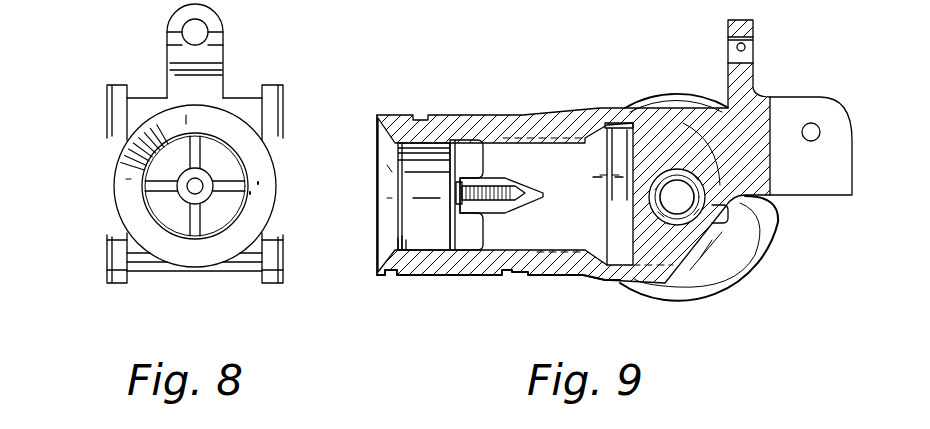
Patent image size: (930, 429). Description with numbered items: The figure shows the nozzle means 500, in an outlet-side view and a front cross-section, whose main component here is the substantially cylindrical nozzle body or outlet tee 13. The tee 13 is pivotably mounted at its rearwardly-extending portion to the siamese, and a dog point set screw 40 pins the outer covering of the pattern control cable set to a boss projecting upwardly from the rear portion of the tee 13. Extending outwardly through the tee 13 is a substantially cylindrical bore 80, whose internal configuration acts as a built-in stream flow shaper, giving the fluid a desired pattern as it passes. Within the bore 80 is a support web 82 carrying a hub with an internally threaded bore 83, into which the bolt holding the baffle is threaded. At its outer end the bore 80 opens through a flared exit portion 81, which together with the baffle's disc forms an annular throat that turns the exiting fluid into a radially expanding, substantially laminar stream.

In FIG. 8, the nozzle means 500 is at (135, 83).
In FIG. 9, the nozzle means 500 is at (557, 105).
In FIG. 8, the dog point set screw 40 is at (223, 25).
In FIG. 9, the dog point set screw 40 is at (732, 28).
In FIG. 8, the bore 80 is at (223, 162).
In FIG. 9, the bore 80 is at (415, 218).
In FIG. 9, the flared exit portion 81 is at (398, 248).
In FIG. 8, the support web 82 is at (230, 183).
In FIG. 9, the support web 82 is at (463, 155).
In FIG. 8, the internally threaded bore 83 is at (188, 191).
In FIG. 9, the internally threaded bore 83 is at (473, 183).
In FIG. 9, the nozzle outlet tee 13 is at (585, 275).